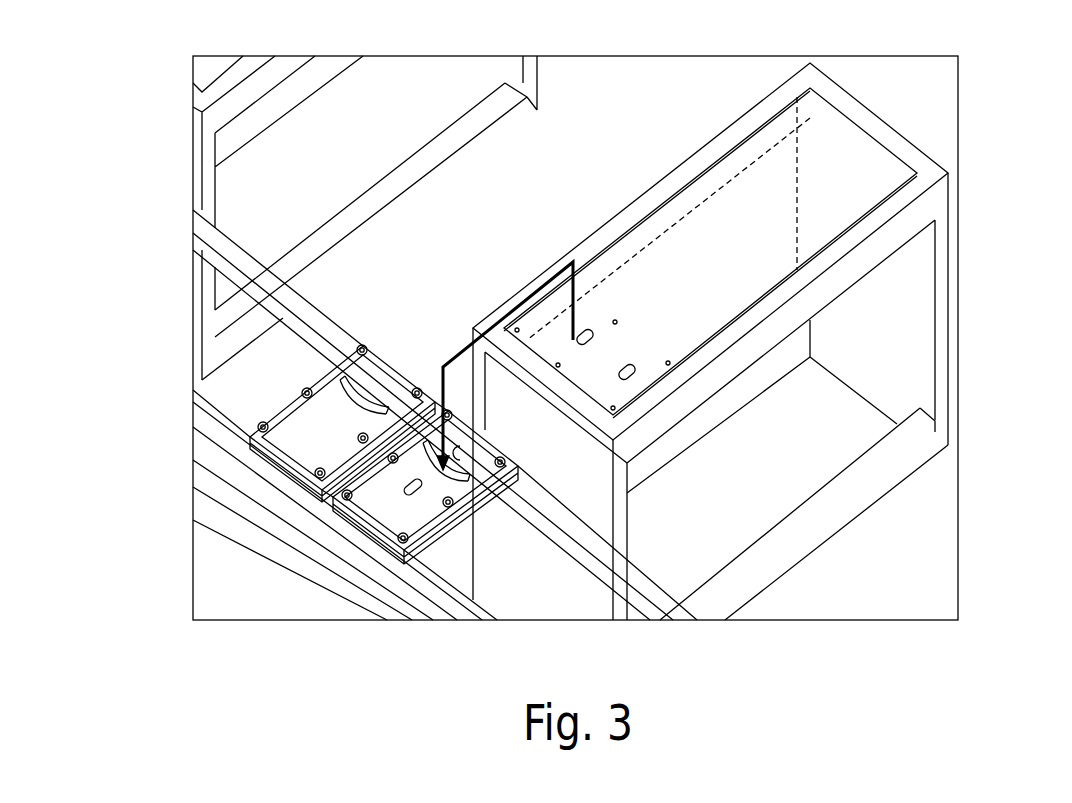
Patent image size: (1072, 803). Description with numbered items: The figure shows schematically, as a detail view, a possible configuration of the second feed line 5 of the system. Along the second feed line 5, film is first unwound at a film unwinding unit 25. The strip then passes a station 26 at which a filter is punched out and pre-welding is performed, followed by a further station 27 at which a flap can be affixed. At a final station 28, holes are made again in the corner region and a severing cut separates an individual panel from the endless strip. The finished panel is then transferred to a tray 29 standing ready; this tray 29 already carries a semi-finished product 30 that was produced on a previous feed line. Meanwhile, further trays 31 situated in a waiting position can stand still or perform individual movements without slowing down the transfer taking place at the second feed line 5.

The second feed line 5 is at (962, 92).
The film unwinding unit 25 is at (842, 161).
The station 26 is at (777, 213).
The station 27 is at (722, 256).
The station 28 is at (657, 311).
The tray 29 is at (403, 512).
The semi-finished product 30 is at (480, 465).
The trays 31 is at (313, 435).